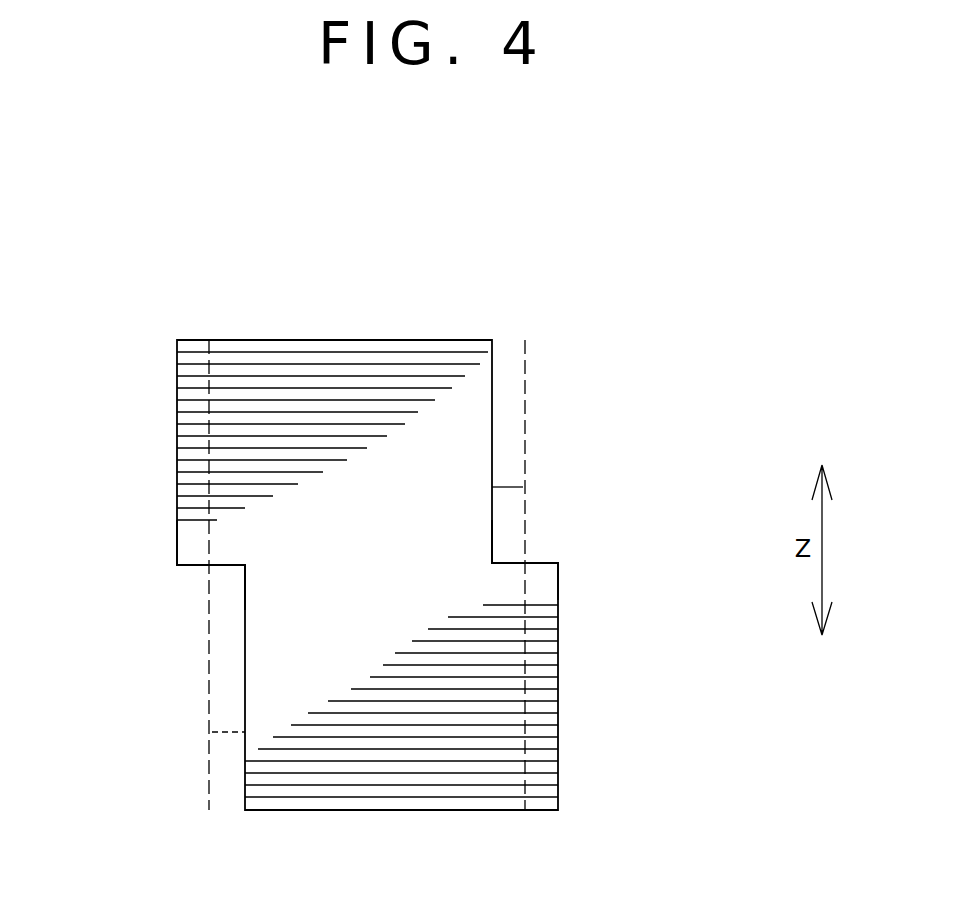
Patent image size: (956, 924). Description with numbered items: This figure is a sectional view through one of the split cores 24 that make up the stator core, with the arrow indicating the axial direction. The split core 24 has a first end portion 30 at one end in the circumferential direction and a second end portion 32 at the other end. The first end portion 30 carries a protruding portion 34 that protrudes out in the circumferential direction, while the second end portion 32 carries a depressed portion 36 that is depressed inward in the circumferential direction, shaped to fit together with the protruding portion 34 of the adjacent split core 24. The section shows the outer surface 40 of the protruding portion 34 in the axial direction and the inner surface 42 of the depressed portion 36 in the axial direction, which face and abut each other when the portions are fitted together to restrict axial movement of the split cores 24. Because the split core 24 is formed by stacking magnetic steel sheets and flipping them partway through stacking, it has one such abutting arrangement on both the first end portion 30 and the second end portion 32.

The split core 24 is at (396, 321).
The first end portion 30 is at (208, 410).
The second end portion 32 is at (523, 388).
The protruding portion 34 is at (155, 574).
The depressed portion 36 is at (492, 487).
The outer surface 40 is at (545, 562).
The inner surface 42 is at (506, 562).